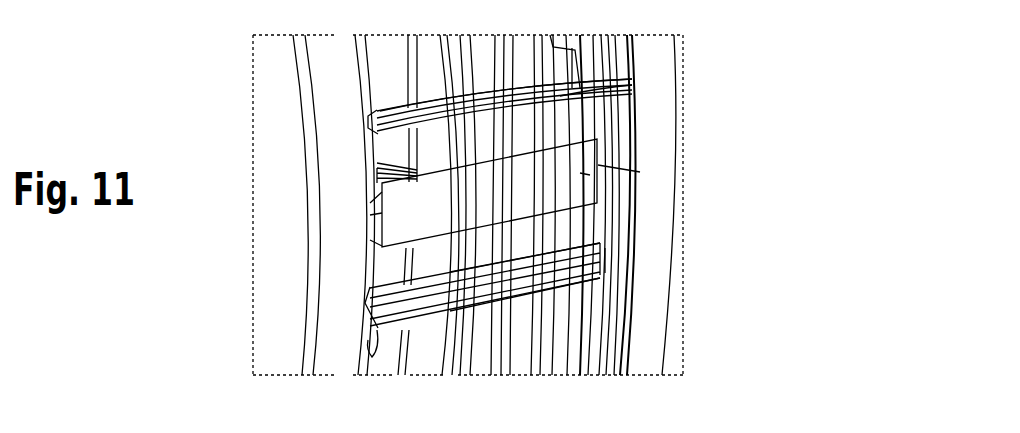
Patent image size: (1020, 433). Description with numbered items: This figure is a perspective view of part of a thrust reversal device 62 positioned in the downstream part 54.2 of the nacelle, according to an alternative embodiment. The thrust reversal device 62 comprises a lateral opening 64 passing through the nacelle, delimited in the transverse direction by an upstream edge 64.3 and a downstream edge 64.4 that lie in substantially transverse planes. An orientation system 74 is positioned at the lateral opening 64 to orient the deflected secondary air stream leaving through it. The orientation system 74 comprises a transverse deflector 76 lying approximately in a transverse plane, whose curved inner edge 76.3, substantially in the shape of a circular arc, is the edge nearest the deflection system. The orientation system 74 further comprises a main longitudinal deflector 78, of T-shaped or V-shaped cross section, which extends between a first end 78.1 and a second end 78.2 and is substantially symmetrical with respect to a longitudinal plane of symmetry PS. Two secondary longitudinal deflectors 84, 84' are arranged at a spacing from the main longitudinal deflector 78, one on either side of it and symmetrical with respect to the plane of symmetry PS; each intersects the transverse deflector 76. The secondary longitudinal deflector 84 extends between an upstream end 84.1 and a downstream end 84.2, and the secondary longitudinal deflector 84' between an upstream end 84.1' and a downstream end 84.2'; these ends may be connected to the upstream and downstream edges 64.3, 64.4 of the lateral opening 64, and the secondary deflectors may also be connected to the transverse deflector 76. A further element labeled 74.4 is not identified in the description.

The downstream part 54.2 is at (657, 45).
The downstream end 84.2' is at (578, 75).
The secondary longitudinal deflector 84' is at (647, 78).
The longitudinal plane of symmetry PS is at (580, 173).
The main longitudinal deflector 78 is at (606, 150).
The second end 78.2 is at (603, 177).
The lateral opening 64 is at (590, 227).
The secondary longitudinal deflector 84 is at (596, 257).
The downstream end 84.2 is at (601, 293).
The downstream edge 64.4 is at (607, 321).
The thrust reversal device 62 is at (570, 357).
The upstream end 84.1' is at (281, 113).
The orientation system 74 is at (397, 151).
The first end 78.1 is at (377, 215).
The upstream end 84.1 is at (283, 304).
The upstream edge 64.3 is at (360, 360).
The transverse deflector 76 is at (537, 62).
The inner edge 76.3 is at (392, 360).
The rib lower end 74.4 is at (448, 360).